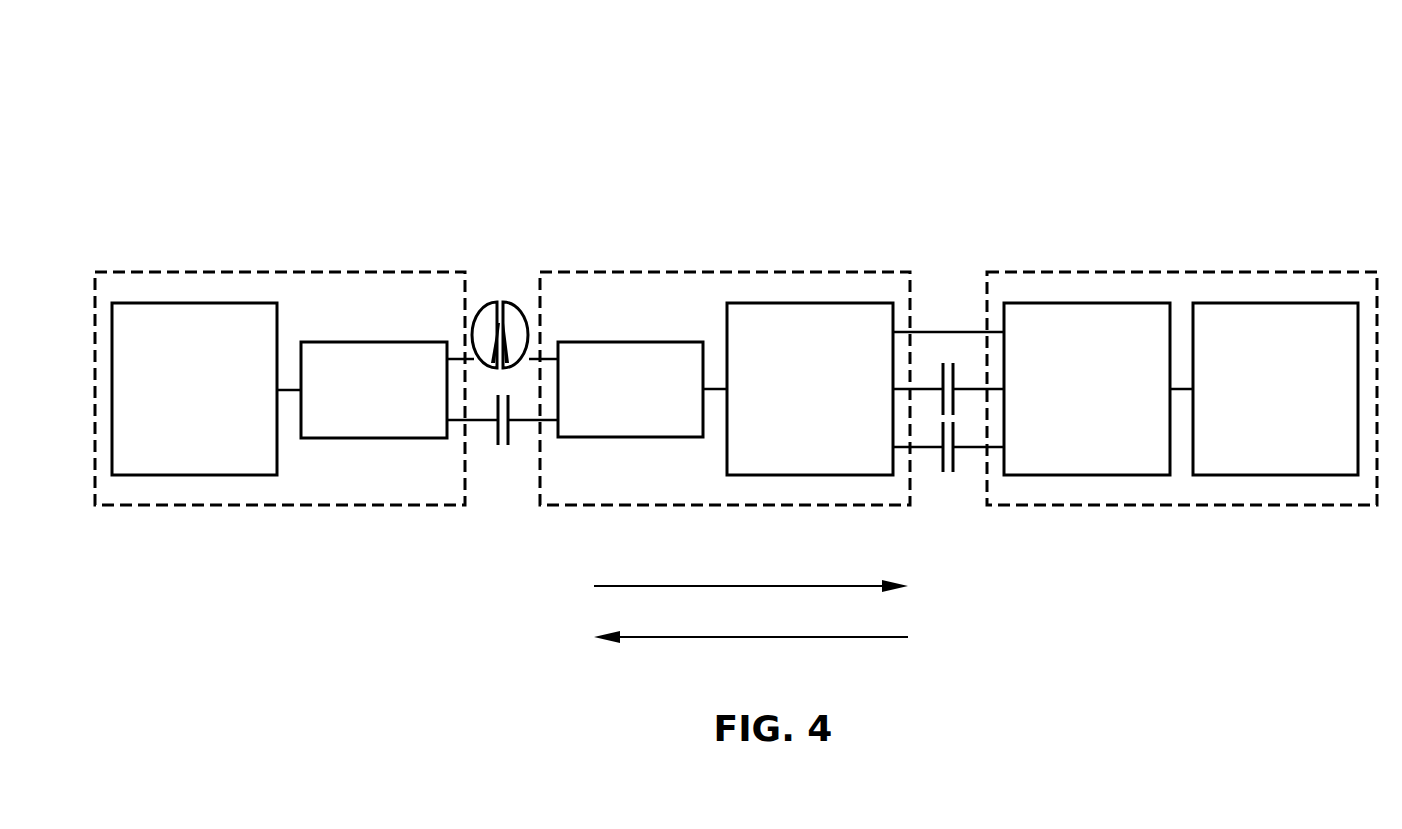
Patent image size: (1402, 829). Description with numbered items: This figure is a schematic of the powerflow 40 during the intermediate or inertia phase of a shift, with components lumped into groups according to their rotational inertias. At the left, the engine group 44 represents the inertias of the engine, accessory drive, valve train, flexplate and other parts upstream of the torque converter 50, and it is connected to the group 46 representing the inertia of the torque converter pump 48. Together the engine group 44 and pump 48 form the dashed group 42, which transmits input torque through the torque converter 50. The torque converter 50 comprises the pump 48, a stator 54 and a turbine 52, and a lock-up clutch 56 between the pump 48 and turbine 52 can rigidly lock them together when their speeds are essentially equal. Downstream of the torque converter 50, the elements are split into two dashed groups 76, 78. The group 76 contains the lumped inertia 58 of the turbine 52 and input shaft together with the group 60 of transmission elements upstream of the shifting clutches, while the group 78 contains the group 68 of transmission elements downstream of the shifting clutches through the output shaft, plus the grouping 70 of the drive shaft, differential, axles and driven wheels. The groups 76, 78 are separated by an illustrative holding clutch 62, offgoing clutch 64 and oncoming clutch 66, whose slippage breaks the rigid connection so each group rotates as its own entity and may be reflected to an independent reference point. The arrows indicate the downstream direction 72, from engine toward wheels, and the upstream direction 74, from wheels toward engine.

The powerflow 40 is at (196, 91).
The group 42 is at (237, 272).
The engine group 44 is at (176, 407).
The group 46 is at (355, 407).
The pump 48 is at (489, 305).
The torque converter 50 is at (577, 188).
The turbine 52 is at (513, 305).
The stator 54 is at (500, 322).
The lock-up clutch 56 is at (499, 468).
The torque converter turbine/input shaft inertia 58 is at (612, 407).
The group of transmission elements 60 is at (791, 407).
The holding clutch 62 is at (930, 330).
The offgoing clutch 64 is at (970, 387).
The oncoming clutch 66 is at (935, 449).
The group of transmission elements 68 is at (1069, 407).
The grouping of drive shaft, differential, axle/half-axles and driven wheels 70 is at (1257, 407).
The downstream direction 72 is at (625, 586).
The upstream direction 74 is at (877, 637).
The group 76 is at (688, 272).
The group 78 is at (1132, 272).